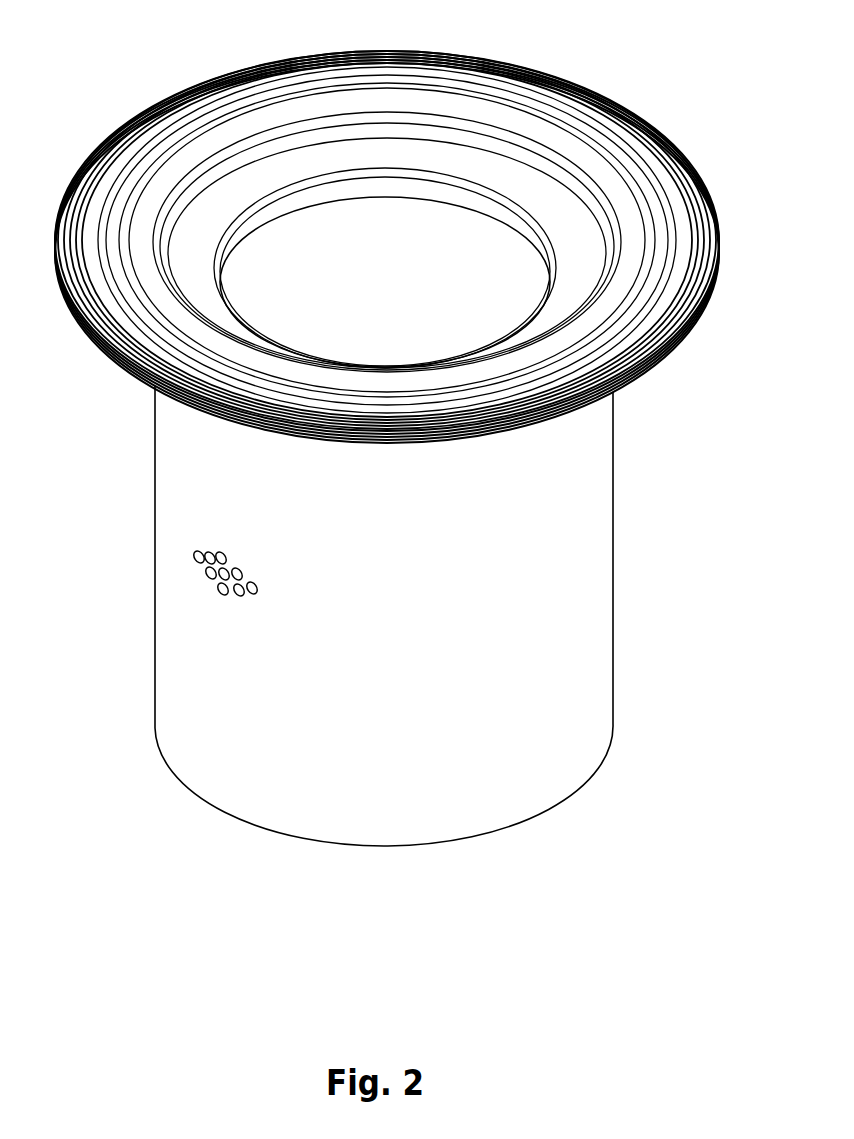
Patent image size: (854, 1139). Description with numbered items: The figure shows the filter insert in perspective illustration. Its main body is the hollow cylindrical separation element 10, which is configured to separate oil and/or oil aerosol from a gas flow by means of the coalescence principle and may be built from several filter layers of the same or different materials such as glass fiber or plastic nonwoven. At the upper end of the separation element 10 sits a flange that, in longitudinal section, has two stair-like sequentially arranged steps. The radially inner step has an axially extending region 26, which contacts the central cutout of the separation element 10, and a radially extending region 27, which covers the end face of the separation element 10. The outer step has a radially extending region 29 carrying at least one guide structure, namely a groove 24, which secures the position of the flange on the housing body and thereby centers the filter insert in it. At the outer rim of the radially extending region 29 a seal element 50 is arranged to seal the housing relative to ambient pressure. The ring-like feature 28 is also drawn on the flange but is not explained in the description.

The separation element 10 is at (459, 627).
The groove 24 is at (588, 113).
The axially extending region 26 is at (415, 190).
The radially extending region 27 is at (586, 267).
The inner annular ring 28 is at (293, 137).
The radially extending region 29 is at (633, 202).
The seal element 50 is at (707, 220).